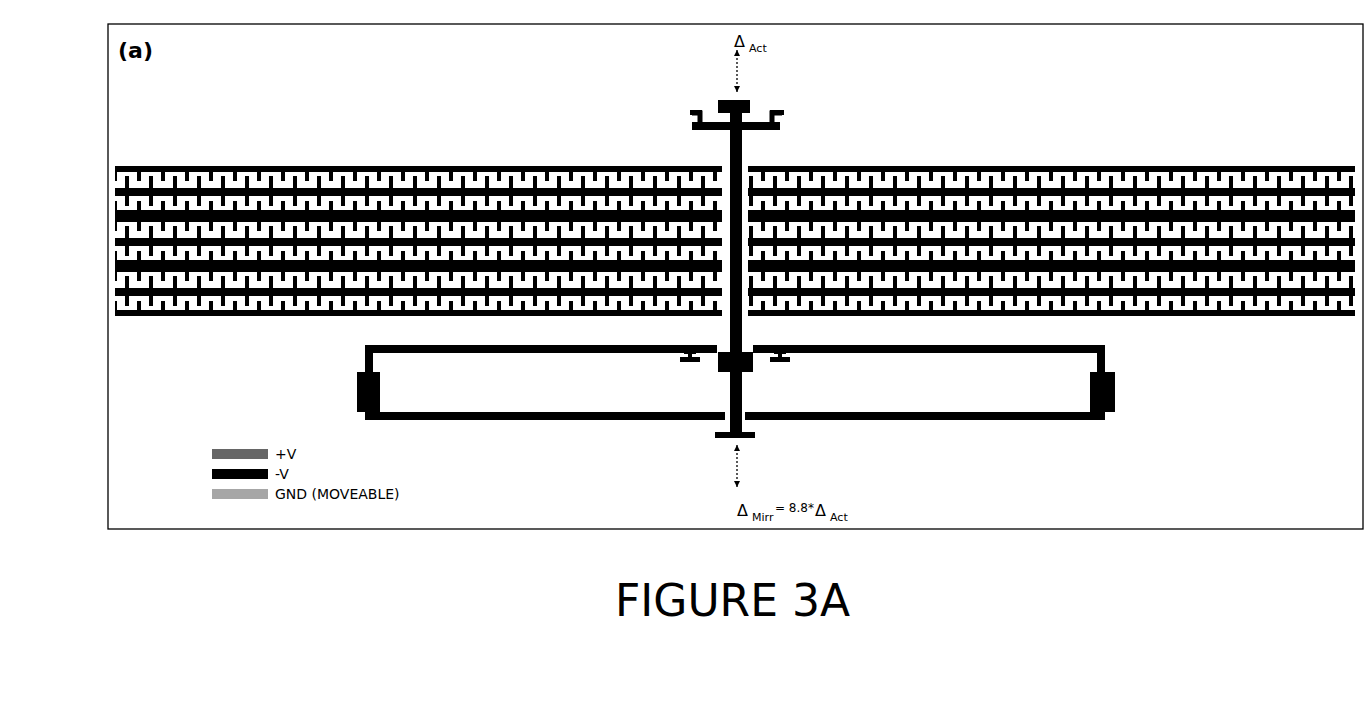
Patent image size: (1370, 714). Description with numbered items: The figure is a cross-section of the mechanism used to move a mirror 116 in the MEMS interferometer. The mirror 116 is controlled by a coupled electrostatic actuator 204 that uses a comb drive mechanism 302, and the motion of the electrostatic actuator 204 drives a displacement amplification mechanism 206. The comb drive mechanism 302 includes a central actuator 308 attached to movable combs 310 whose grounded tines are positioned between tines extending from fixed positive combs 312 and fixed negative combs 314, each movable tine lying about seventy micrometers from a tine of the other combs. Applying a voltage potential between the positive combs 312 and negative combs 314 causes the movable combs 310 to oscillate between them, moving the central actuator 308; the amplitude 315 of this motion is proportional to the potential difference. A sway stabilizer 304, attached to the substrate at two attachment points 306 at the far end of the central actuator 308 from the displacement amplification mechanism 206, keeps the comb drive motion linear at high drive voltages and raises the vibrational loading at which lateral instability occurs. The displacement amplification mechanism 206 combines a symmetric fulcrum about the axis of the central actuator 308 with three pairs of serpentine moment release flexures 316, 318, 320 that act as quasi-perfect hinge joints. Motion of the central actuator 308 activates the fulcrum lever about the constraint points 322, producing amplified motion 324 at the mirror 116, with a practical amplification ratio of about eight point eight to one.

The mirror 116 is at (750, 438).
The electrostatic actuator 204 is at (690, 246).
The displacement amplification mechanism 206 is at (732, 417).
The comb drive mechanism 302 is at (690, 237).
The sway stabilizer 304 is at (768, 95).
The attachment points 306 is at (695, 112).
The central actuator 308 is at (720, 125).
The movable combs 310 is at (980, 183).
The positive combs 312 is at (1125, 170).
The negative combs 314 is at (735, 339).
The amplitude 315 is at (735, 75).
The serpentine moment release flexures 316 is at (692, 365).
The serpentine moment release flexures 318 is at (722, 373).
The serpentine moment release flexures 320 is at (385, 392).
The constraint points 322 is at (830, 378).
The motion 324 is at (735, 470).